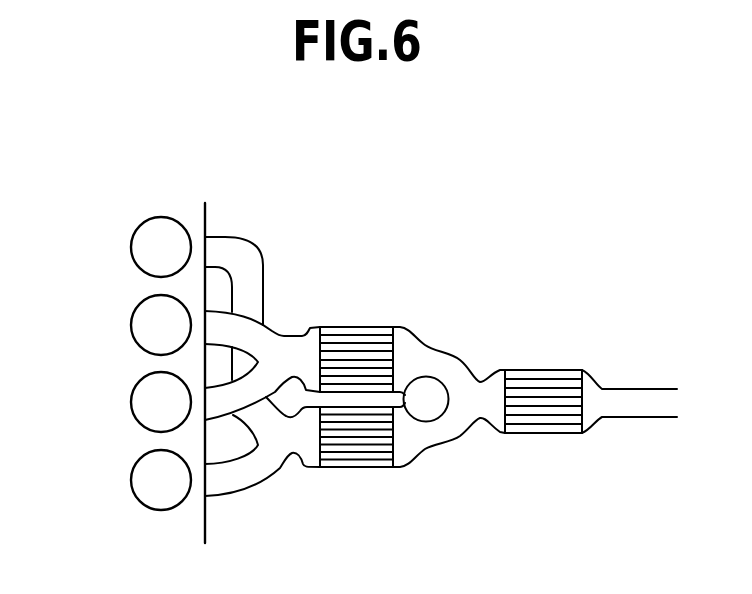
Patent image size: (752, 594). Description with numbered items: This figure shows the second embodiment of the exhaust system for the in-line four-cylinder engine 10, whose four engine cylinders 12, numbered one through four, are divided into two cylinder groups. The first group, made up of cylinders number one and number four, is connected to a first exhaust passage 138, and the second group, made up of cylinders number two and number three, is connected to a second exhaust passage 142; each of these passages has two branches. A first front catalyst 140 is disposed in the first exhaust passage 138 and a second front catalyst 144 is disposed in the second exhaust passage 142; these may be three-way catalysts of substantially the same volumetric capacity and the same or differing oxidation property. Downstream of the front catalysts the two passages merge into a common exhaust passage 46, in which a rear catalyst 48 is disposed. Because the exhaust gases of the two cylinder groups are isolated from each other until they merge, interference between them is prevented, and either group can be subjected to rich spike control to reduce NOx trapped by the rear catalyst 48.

The engine 10 is at (190, 211).
The engine cylinder 12 is at (131, 253).
The first exhaust passage 138 is at (298, 440).
The first front catalyst 140 is at (373, 443).
The second exhaust passage 142 is at (273, 342).
The second front catalyst 144 is at (350, 328).
The common exhaust passage 46 is at (482, 398).
The rear catalyst 48 is at (558, 370).